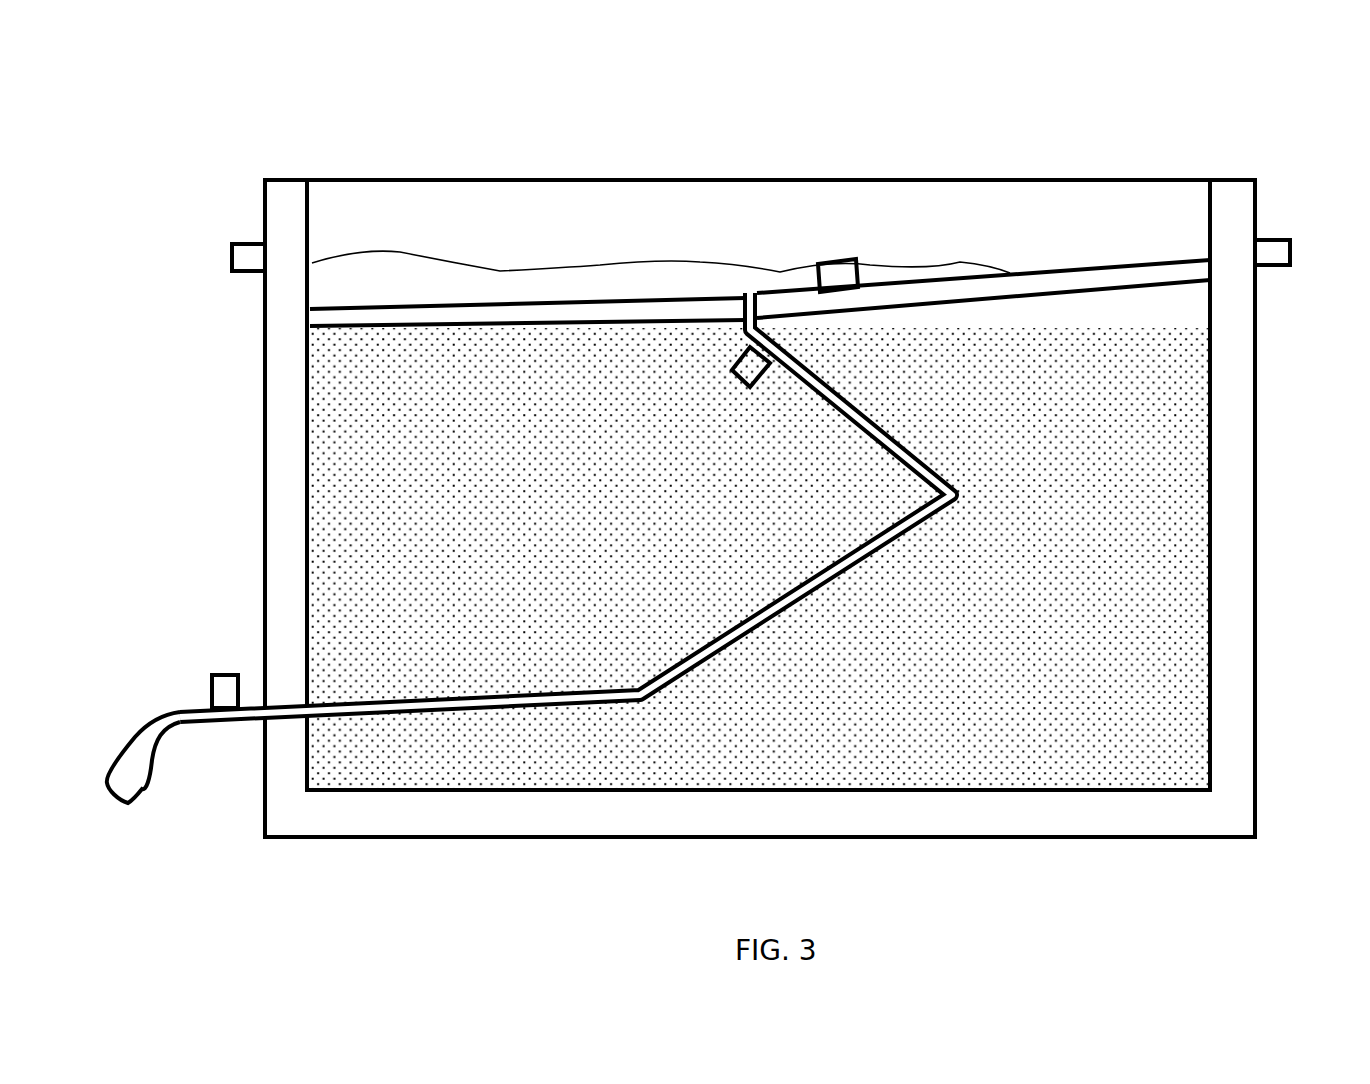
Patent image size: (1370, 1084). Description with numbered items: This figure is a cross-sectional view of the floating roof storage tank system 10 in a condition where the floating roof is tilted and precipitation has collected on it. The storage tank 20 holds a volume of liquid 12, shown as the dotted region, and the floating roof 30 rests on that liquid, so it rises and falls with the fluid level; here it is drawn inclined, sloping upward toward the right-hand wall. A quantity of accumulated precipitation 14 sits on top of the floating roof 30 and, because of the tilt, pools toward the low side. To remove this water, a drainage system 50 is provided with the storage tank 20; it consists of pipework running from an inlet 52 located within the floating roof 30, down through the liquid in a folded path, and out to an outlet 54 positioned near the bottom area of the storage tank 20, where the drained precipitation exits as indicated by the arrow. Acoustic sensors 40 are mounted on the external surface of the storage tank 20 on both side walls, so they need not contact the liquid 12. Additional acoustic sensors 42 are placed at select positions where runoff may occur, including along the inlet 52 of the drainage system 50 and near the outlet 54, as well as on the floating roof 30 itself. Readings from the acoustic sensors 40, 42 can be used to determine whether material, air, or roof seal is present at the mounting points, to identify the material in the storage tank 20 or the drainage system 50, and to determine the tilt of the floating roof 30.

The floating roof storage tank system 10 is at (330, 135).
The fluid 12 is at (1073, 634).
The accumulated precipitation 14 is at (418, 275).
The storage tank 20 is at (262, 465).
The floating roof 30 is at (1113, 275).
The acoustic sensors 40 is at (232, 262).
The additional acoustic sensors 42 is at (840, 262).
The drainage system 50 is at (556, 700).
The inlet 52 is at (748, 268).
The outlet 54 is at (222, 756).